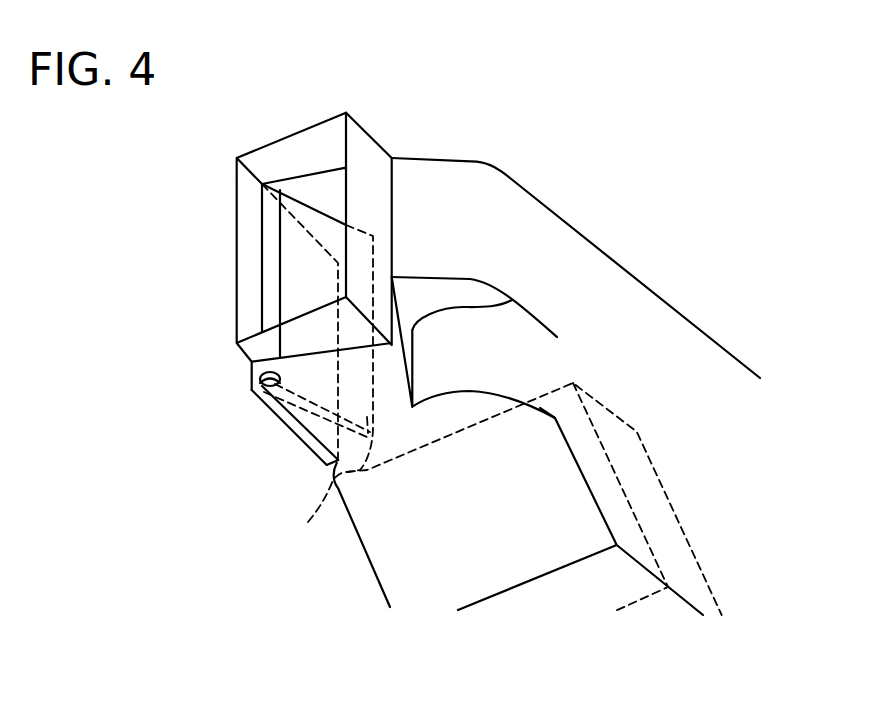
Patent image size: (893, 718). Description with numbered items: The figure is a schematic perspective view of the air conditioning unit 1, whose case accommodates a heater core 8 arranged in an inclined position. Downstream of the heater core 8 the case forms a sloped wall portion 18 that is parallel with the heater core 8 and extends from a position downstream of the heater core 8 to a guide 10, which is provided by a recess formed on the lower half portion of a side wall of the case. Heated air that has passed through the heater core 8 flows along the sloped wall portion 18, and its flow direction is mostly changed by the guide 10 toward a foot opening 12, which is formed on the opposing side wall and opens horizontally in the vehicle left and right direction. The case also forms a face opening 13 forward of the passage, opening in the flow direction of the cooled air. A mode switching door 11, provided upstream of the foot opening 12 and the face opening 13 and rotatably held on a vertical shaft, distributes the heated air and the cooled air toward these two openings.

The air conditioning unit 1 is at (660, 277).
The heater core 8 is at (676, 552).
The guide 10 is at (457, 335).
The mode switching door 11 is at (308, 522).
The foot opening 12 is at (297, 435).
The face opening 13 is at (330, 178).
The sloped wall portion 18 is at (530, 550).